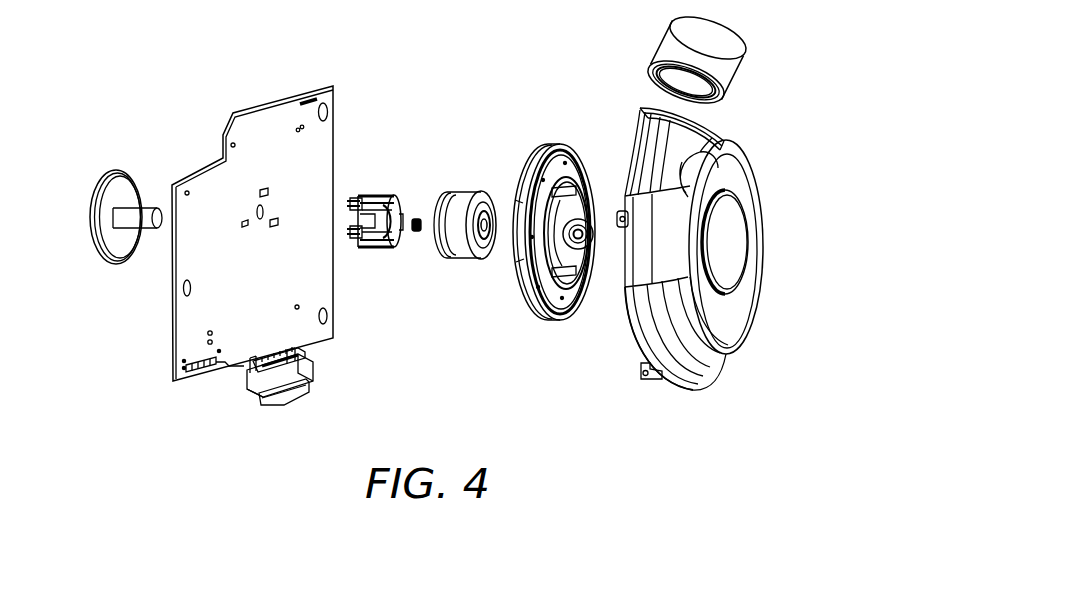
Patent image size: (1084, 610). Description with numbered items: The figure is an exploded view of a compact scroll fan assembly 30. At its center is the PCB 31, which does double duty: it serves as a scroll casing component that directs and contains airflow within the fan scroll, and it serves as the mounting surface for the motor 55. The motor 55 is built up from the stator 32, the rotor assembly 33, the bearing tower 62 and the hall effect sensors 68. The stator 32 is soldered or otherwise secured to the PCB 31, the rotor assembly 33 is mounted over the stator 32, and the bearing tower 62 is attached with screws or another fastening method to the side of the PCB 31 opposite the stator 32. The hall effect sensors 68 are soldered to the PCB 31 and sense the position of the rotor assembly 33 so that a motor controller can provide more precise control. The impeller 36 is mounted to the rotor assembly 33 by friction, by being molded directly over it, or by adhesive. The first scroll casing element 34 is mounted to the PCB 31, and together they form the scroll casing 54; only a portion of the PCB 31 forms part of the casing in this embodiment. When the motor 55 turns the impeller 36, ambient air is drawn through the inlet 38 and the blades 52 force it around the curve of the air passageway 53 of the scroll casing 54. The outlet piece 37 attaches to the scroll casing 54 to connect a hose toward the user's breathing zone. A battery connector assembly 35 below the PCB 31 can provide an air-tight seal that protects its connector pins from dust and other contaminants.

The compact scroll fan assembly 30 is at (351, 43).
The PCB 31 is at (204, 170).
The stator 32 is at (381, 196).
The rotor assembly 33 is at (465, 188).
The first scroll casing element 34 is at (732, 140).
The battery connector assembly 35 is at (294, 398).
The impeller 36 is at (546, 152).
The outlet piece 37 is at (672, 38).
The inlet 38 is at (724, 241).
The blades 52 is at (527, 178).
The air passageway 53 is at (718, 340).
The scroll casing 54 is at (647, 317).
The motor 55 is at (437, 249).
The bearing tower 62 is at (100, 187).
The hall effect sensors 68 is at (243, 229).